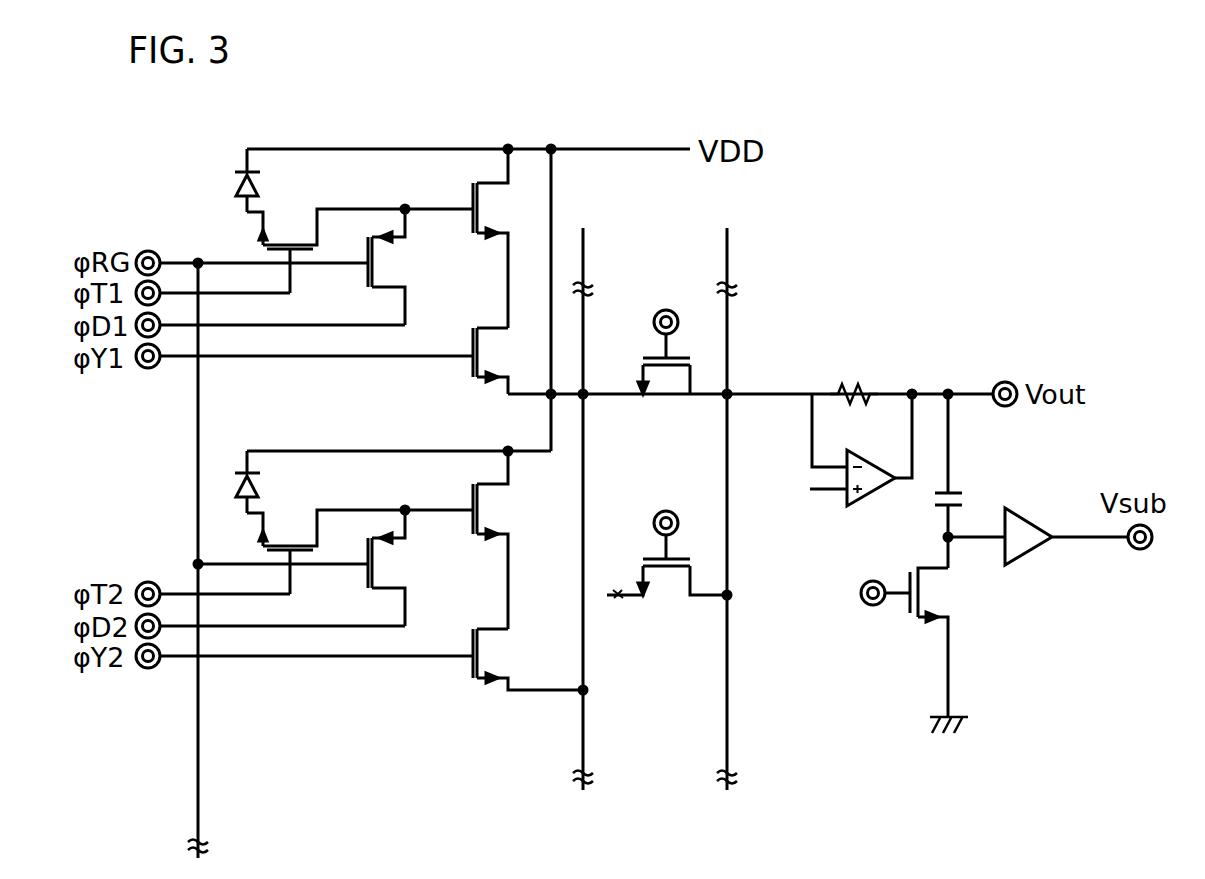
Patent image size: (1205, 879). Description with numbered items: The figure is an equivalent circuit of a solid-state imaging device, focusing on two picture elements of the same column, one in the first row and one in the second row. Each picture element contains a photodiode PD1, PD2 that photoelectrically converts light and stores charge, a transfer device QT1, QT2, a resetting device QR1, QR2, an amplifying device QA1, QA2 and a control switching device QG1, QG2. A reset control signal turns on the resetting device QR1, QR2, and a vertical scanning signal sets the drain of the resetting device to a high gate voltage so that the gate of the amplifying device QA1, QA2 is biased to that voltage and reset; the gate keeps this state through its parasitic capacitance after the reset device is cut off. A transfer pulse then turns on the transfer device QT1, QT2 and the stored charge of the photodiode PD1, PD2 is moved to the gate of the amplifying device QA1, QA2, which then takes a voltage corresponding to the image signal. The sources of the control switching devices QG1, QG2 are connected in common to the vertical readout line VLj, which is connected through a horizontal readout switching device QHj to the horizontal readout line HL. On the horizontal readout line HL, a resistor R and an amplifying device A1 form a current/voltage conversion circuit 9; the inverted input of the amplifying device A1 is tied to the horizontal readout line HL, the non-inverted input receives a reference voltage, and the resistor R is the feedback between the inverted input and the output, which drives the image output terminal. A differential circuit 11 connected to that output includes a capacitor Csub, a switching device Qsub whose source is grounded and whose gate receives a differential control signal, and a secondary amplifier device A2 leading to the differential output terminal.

The current/voltage conversion circuit 9 is at (891, 352).
The differential circuit 11 is at (983, 638).
The photodiode PD1 is at (278, 180).
The photodiode PD2 is at (393, 482).
The transfer device QT1 is at (339, 251).
The transfer device QT2 is at (339, 552).
The resetting device QR1 is at (404, 265).
The resetting device QR2 is at (404, 566).
The amplifying device QA1 is at (506, 238).
The amplifying device QA2 is at (506, 540).
The control switching device QG1 is at (507, 361).
The control switching device QG2 is at (530, 661).
The horizontal readout switching device QHj is at (659, 347).
The vertical readout line VLj is at (561, 509).
The horizontal readout line HL is at (741, 509).
The resistor R is at (854, 375).
The amplifying device A1 is at (861, 465).
The capacitor Csub is at (981, 481).
The switching device Qsub is at (928, 642).
The secondary amplifier device A2 is at (1038, 546).